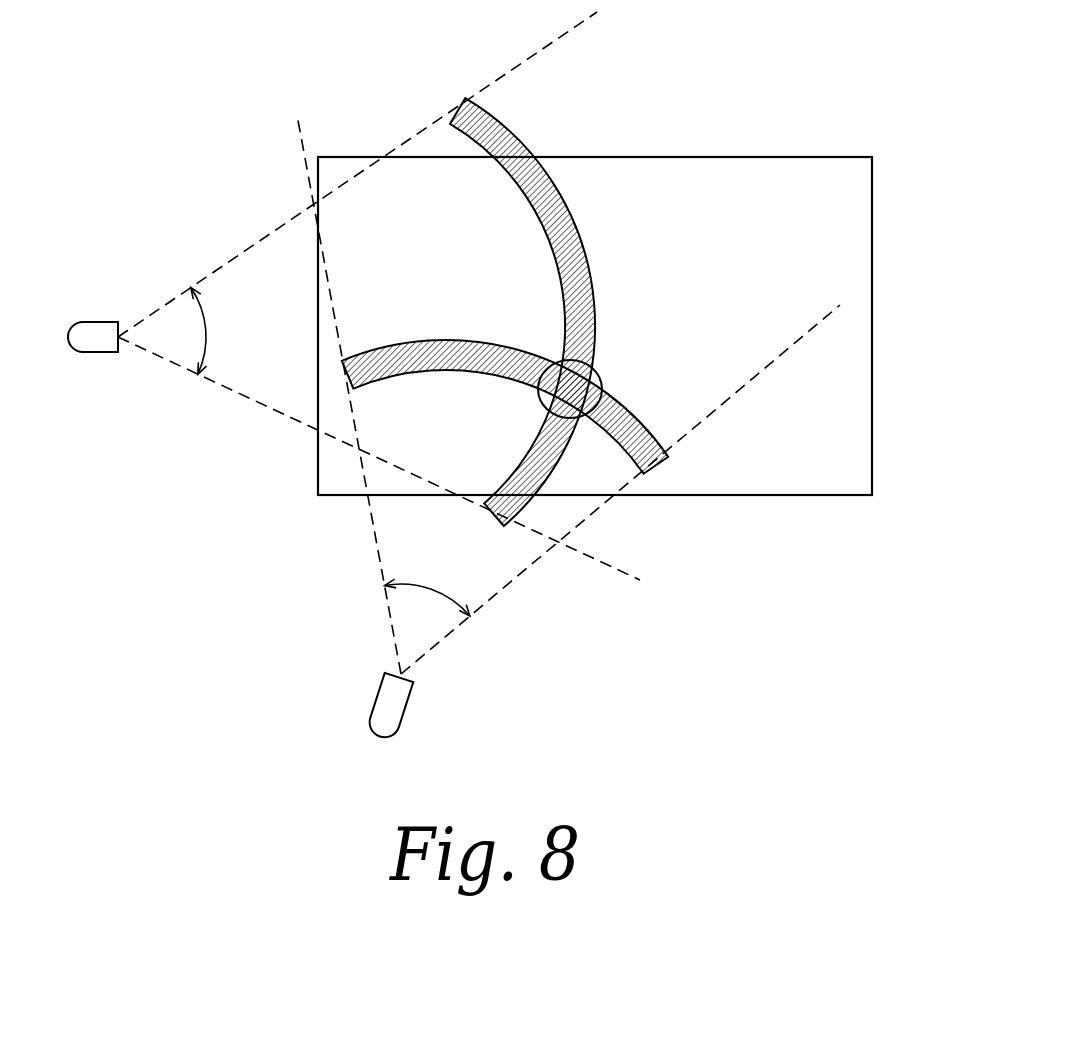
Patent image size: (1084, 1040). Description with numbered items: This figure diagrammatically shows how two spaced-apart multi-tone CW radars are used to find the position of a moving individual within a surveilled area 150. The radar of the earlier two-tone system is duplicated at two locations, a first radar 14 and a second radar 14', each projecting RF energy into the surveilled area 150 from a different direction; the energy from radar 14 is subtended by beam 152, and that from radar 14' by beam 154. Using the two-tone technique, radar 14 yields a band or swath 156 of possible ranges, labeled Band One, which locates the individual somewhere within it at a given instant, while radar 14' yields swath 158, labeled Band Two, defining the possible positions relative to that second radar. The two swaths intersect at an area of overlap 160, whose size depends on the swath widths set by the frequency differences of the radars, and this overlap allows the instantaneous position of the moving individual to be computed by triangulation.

The radar 14 is at (430, 707).
The second radar 14' is at (101, 384).
The surveilled area 150 is at (872, 337).
The beam 152 is at (444, 593).
The beam 154 is at (212, 330).
The swath 156 is at (656, 438).
The swath 158 is at (590, 273).
The area of overlap 160 is at (598, 372).